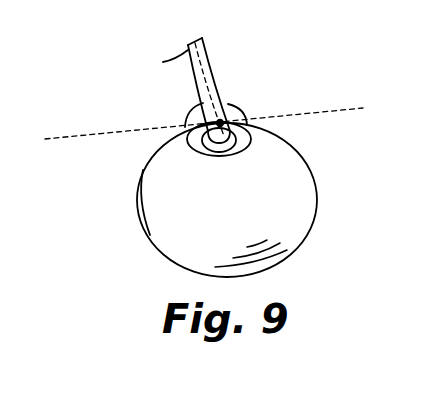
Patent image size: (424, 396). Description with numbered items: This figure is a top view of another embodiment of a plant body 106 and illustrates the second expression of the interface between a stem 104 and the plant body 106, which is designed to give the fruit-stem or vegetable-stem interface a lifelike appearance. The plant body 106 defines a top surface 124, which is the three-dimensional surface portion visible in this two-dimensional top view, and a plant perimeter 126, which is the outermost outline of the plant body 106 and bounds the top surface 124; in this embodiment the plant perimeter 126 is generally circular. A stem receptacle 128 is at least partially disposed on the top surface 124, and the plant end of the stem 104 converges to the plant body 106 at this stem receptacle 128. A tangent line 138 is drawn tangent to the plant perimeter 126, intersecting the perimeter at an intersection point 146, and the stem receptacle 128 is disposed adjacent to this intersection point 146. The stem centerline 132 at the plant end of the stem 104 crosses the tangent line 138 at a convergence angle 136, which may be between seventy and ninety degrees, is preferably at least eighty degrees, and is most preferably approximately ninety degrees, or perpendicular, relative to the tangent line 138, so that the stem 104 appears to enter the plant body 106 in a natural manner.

The stem 104 is at (210, 63).
The plant body 106 is at (303, 185).
The top surface 124 is at (150, 208).
The plant perimeter 126 is at (308, 227).
The stem receptacle 128 is at (254, 139).
The stem centerline 132 is at (212, 93).
The convergence angle 136 is at (190, 107).
The tangent line 138 is at (97, 135).
The intersection point 146 is at (224, 121).